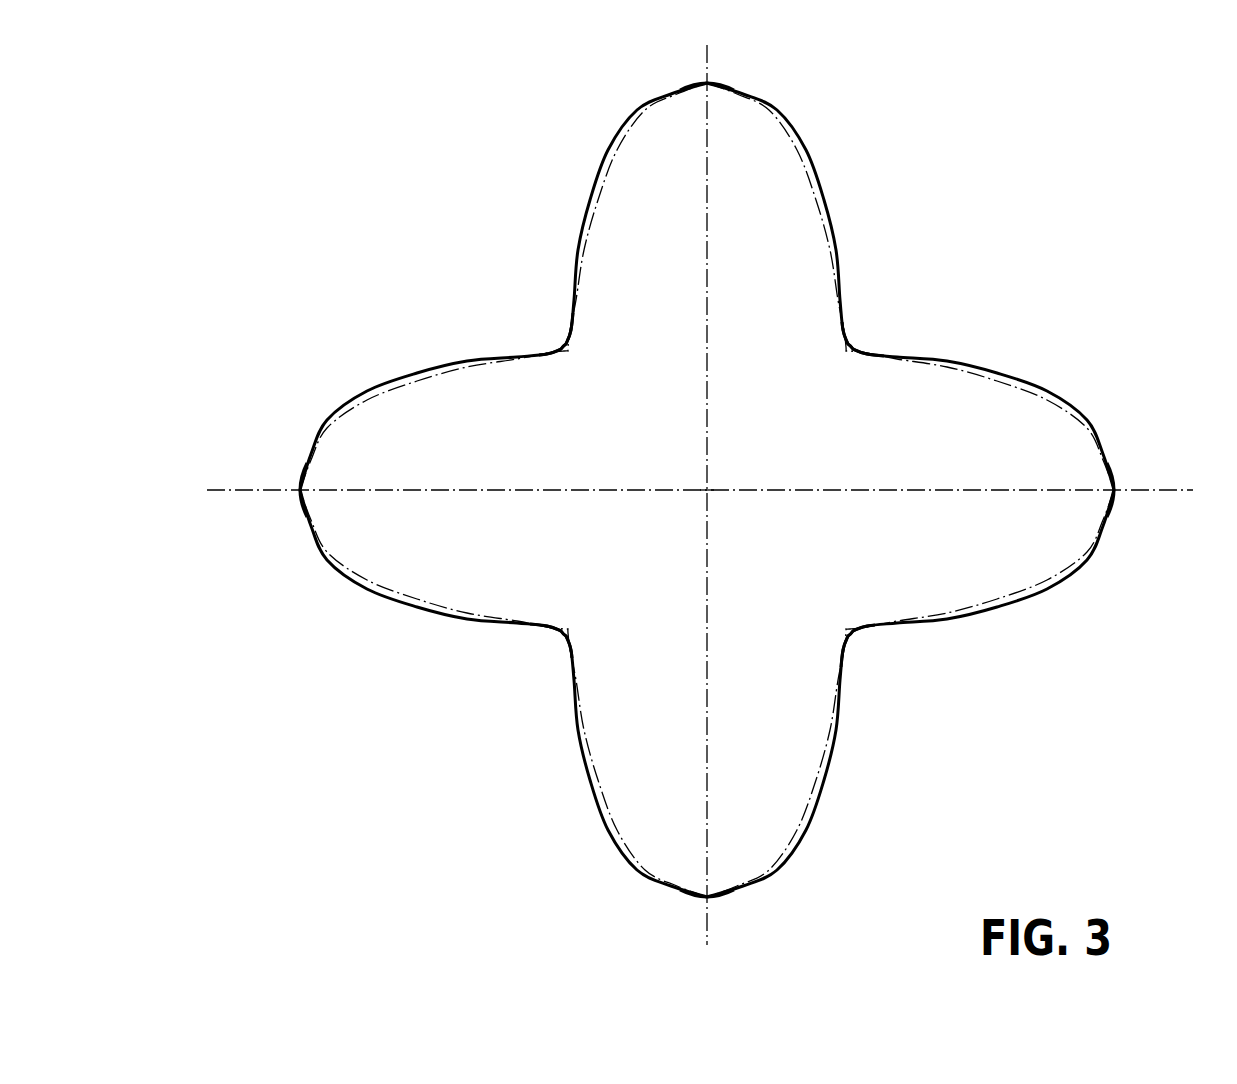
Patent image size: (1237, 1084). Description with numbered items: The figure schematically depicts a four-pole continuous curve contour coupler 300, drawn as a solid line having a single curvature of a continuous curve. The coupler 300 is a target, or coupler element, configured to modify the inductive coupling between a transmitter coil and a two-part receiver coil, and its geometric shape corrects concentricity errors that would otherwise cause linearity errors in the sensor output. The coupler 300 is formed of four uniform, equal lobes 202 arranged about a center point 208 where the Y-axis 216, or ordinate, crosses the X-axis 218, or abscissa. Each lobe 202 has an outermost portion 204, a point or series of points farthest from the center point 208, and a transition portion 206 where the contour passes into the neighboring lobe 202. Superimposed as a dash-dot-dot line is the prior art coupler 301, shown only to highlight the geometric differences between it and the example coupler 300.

The four-pole continuous curve contour coupler 300 is at (702, 501).
The lobe 202 is at (546, 161).
The outermost portion 204 is at (707, 83).
The transition portion 206 is at (564, 347).
The center point 208 is at (709, 490).
The Y-axis 216 is at (710, 75).
The X-axis 218 is at (225, 489).
The prior art coupler 301 is at (401, 598).